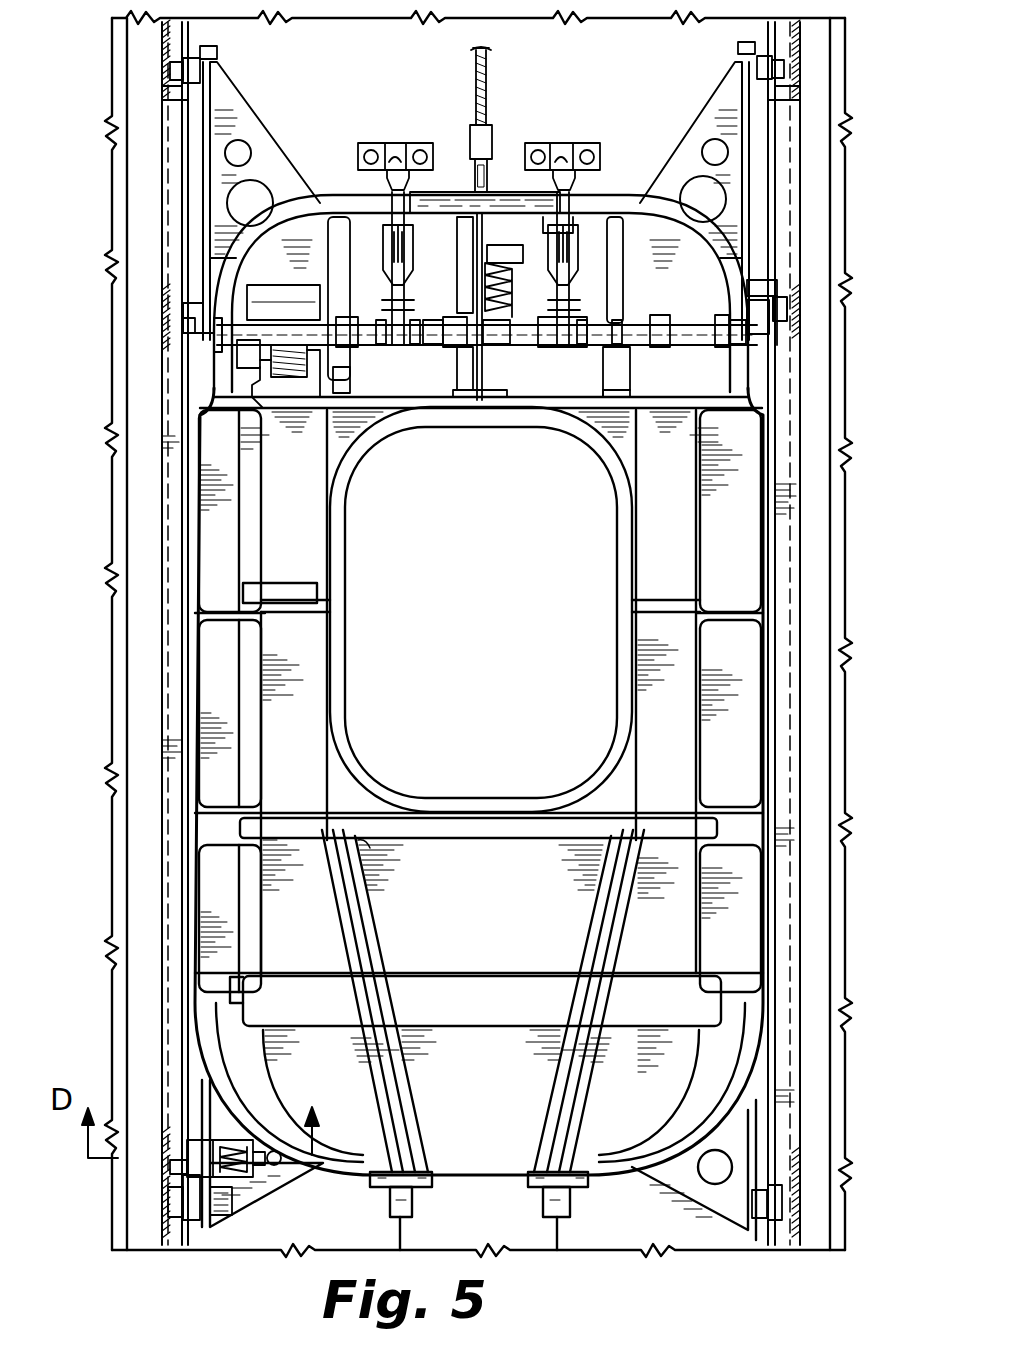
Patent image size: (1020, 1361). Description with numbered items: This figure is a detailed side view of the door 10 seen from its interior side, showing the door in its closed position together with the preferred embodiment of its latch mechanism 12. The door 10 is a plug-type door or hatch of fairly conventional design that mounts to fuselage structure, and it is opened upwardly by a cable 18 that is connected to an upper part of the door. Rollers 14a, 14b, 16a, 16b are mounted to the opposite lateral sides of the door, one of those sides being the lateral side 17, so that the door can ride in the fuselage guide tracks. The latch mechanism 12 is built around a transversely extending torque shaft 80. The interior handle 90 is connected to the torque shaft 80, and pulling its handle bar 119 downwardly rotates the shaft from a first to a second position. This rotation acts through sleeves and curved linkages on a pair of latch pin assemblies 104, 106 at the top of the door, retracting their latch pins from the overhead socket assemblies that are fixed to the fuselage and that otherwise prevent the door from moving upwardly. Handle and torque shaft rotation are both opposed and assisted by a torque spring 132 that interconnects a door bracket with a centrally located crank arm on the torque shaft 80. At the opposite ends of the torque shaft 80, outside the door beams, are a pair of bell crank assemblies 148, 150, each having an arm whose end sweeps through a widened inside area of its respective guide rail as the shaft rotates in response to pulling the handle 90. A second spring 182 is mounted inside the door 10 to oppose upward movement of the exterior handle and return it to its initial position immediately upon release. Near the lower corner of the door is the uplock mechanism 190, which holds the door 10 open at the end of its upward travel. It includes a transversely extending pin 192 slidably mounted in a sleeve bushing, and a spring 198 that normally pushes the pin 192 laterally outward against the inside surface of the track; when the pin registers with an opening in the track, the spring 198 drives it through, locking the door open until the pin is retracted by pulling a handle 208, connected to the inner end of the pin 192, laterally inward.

The door 10 is at (862, 664).
The latch mechanism 12 is at (512, 348).
The roller 14a is at (182, 65).
The roller 14b is at (160, 1220).
The roller 16a is at (790, 56).
The roller 16b is at (790, 1207).
The lateral side 17 is at (311, 1116).
The cable 18 is at (480, 82).
The torque shaft 80 is at (673, 345).
The handle 90 is at (555, 199).
The latch pin assembly 104 is at (386, 189).
The latch pin assembly 106 is at (533, 183).
The handle bar 119 is at (440, 193).
The torque spring 132 is at (510, 287).
The bell crank assembly 148 is at (192, 300).
The bell crank assembly 150 is at (760, 292).
The second spring 182 is at (287, 370).
The uplock mechanism 190 is at (247, 1217).
The pin 192 is at (168, 1176).
The spring 198 is at (230, 1183).
The handle 208 is at (263, 1150).